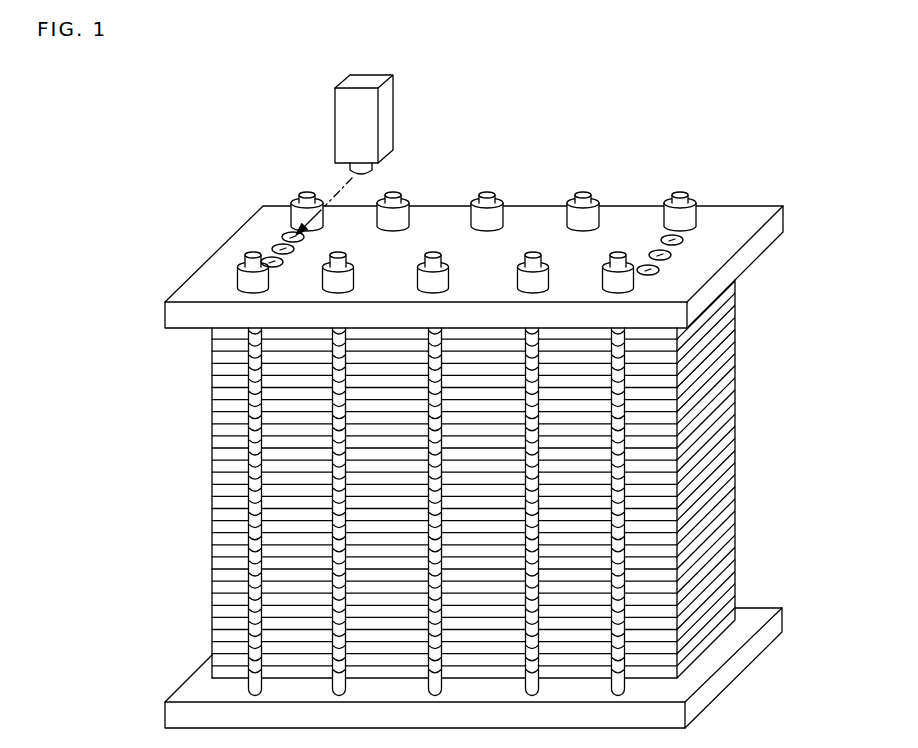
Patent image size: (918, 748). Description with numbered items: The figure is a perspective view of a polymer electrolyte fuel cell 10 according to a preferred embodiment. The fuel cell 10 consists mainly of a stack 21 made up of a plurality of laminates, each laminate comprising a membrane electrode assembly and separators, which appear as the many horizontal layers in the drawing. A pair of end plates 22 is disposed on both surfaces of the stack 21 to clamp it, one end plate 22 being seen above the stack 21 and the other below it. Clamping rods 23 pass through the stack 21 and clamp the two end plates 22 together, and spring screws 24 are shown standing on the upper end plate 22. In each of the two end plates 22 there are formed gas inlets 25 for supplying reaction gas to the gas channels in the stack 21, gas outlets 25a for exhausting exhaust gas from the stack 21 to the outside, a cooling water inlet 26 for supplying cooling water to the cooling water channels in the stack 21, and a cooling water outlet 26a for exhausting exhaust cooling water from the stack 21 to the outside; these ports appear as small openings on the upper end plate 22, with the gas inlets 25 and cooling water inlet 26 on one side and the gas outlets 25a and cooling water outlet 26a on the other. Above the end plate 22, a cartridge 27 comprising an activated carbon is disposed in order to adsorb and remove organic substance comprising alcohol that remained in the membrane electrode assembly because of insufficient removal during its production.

The polymer electrolyte fuel cell 10 is at (675, 123).
The stack 21 is at (226, 418).
The end plate 22 is at (180, 315).
The clamping rod 23 is at (253, 551).
The spring screw 24 is at (497, 213).
The gas inlet 25 is at (683, 235).
The cooling water inlet 26 is at (671, 254).
The gas outlet 25a is at (284, 237).
The cooling water outlet 26a is at (273, 247).
The cartridge 27 is at (370, 125).